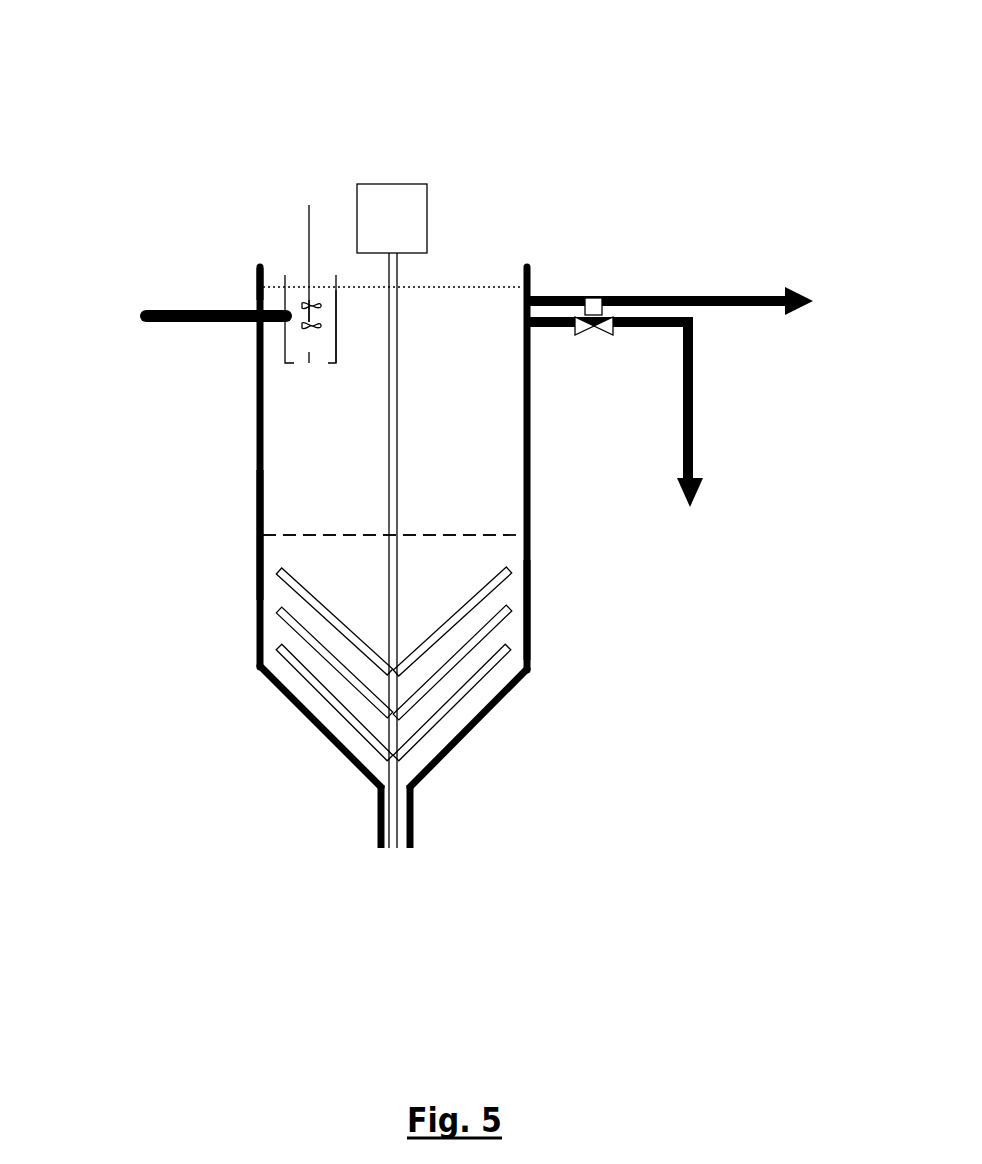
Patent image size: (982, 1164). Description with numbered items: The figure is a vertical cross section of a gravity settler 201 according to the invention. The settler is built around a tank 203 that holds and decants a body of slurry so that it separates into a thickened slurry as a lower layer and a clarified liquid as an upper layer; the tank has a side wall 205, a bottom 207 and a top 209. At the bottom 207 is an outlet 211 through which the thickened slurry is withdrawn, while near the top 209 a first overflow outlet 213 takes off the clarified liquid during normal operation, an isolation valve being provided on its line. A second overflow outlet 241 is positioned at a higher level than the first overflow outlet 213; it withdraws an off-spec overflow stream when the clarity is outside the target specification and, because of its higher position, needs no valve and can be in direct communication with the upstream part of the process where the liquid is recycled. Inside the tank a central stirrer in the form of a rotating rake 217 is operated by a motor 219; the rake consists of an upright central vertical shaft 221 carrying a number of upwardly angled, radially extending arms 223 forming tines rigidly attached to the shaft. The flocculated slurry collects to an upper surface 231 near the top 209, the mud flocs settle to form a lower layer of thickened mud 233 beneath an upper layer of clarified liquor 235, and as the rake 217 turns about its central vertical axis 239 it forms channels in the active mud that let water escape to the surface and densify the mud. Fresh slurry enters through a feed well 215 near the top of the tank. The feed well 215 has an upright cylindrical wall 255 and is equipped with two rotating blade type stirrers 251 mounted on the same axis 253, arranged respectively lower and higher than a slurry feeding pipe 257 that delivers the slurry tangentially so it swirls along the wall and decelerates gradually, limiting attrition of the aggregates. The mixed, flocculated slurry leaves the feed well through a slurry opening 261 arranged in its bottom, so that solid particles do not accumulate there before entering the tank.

The gravity settler 201 is at (672, 98).
The tank 203 is at (257, 573).
The side wall 205 is at (257, 525).
The bottom 207 is at (287, 700).
The top 209 is at (255, 280).
The outlet 211 is at (413, 820).
The first overflow outlet 213 is at (542, 295).
The feed well 215 is at (276, 242).
The rotating rake 217 is at (427, 737).
The motor 219 is at (408, 183).
The central vertical shaft 221 is at (392, 545).
The radially-extending arms 223 is at (490, 628).
The upper surface 231 is at (483, 317).
The thickened mud 233 is at (510, 592).
The clarified liquor 235 is at (468, 372).
The central vertical axis 239 is at (392, 545).
The second overflow outlet 241 is at (573, 315).
The rotating blade type stirrers 251 is at (299, 304).
The axis 253 is at (312, 226).
The upright cylindrical wall 255 is at (338, 326).
The slurry feeding pipe 257 is at (152, 310).
The slurry opening 261 is at (310, 353).